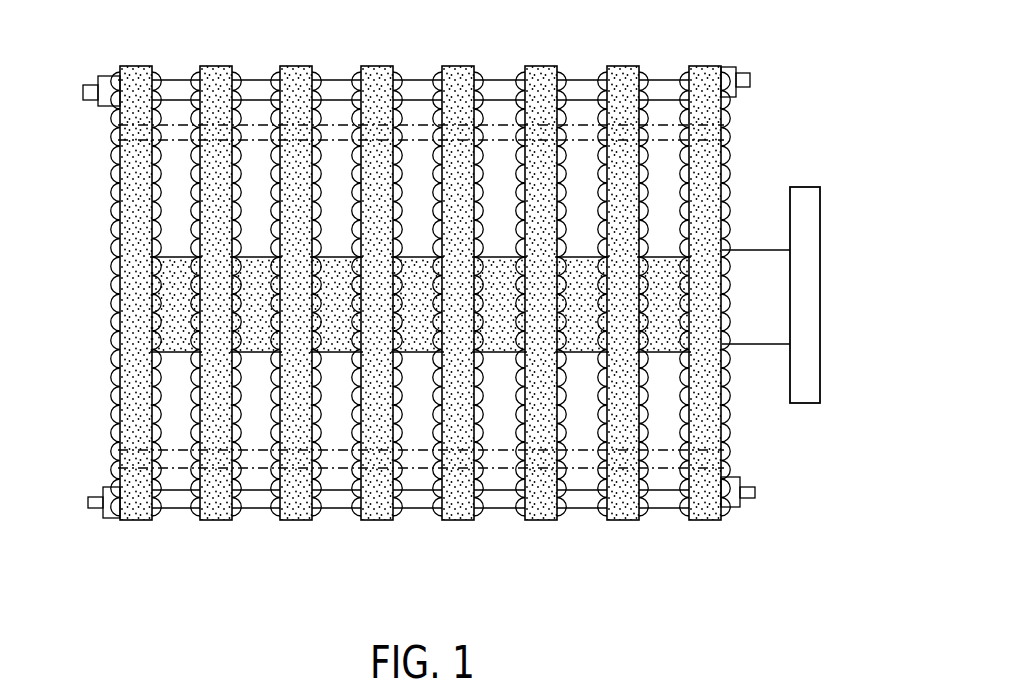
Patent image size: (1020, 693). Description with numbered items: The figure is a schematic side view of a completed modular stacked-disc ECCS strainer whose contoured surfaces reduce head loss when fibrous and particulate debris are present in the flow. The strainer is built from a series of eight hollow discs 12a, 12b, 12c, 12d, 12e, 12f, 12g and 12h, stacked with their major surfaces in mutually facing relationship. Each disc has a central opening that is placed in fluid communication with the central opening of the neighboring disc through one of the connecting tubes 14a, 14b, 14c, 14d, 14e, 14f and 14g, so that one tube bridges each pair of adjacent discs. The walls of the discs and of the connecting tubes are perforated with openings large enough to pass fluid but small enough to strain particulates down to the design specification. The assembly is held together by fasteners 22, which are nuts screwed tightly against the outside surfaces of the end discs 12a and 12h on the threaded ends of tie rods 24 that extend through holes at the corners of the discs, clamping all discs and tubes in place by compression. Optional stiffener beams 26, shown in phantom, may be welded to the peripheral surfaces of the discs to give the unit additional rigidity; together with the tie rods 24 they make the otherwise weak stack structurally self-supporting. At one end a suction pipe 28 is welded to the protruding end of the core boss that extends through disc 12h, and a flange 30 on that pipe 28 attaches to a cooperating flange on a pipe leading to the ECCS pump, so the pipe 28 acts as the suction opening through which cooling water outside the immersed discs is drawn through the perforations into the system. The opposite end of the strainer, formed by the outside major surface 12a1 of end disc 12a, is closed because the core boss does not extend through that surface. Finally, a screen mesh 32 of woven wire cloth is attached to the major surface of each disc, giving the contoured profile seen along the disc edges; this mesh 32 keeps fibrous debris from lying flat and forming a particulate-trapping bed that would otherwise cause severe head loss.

The hollow disc 12a is at (140, 520).
The outside major surface of end disc 12a1 is at (120, 412).
The hollow disc 12b is at (223, 520).
The hollow disc 12c is at (300, 520).
The hollow disc 12d is at (380, 520).
The hollow disc 12e is at (458, 520).
The hollow disc 12f is at (547, 520).
The hollow disc 12g is at (620, 520).
The hollow disc 12h is at (712, 520).
The connecting tube 14a is at (178, 257).
The connecting tube 14b is at (244, 353).
The connecting tube 14c is at (340, 255).
The connecting tube 14d is at (420, 255).
The connecting tube 14e is at (500, 255).
The connecting tube 14f is at (577, 255).
The connecting tube 14g is at (660, 350).
The fastener 22 is at (100, 76).
The tie rod 24 is at (652, 100).
The stiffener beam 26 is at (172, 133).
The suction pipe 28 is at (762, 250).
The flange 30 is at (804, 187).
The screen mesh 32 is at (163, 86).